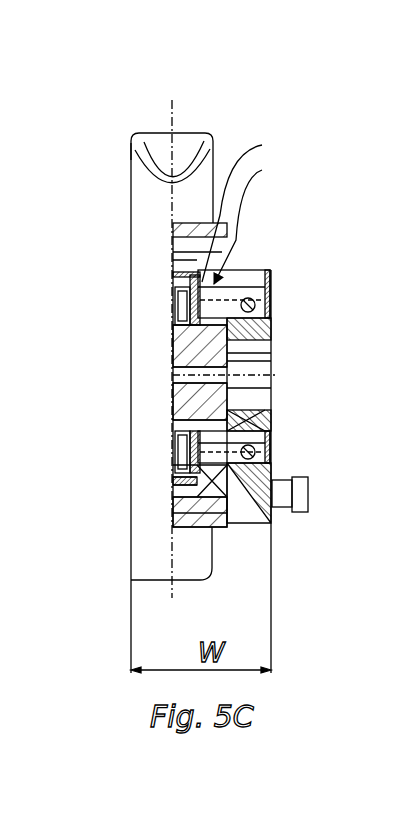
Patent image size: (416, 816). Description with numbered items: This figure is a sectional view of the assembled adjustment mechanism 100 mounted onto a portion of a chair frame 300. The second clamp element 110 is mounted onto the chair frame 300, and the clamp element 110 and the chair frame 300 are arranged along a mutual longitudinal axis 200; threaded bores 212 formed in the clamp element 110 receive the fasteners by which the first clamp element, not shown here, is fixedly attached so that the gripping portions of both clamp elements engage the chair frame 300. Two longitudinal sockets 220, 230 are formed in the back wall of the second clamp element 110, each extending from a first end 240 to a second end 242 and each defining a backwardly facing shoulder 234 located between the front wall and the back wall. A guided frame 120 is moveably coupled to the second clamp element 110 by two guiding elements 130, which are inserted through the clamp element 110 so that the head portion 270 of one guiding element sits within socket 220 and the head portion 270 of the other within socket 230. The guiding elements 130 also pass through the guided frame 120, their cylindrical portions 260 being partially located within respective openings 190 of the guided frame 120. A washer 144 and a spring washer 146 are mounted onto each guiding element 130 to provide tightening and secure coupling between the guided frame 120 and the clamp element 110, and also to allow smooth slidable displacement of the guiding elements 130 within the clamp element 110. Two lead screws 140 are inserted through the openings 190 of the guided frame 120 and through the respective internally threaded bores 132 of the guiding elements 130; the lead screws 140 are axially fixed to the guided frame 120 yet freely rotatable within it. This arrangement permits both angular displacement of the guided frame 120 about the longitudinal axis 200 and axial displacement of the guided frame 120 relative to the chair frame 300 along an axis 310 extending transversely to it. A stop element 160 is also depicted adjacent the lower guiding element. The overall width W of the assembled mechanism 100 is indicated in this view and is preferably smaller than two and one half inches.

The adjustment mechanism 100 is at (189, 209).
The longitudinal axis 200 is at (176, 119).
The chair frame 300 is at (143, 191).
The threaded bores 212 is at (173, 252).
The second end 242 is at (190, 276).
The socket 230 is at (167, 269).
The head portion 270 is at (180, 292).
The first end 240 is at (173, 330).
The socket 220 is at (167, 478).
The spring washer 146 is at (257, 205).
The washer 144 is at (263, 219).
The guiding element 130 is at (238, 284).
The second clamp element 110 is at (230, 276).
The opening 190 is at (270, 272).
The guided frame 120 is at (267, 280).
The cylindrical portion 260 is at (278, 292).
The lead screw 140 is at (272, 310).
The internally threaded bore 132 is at (273, 330).
The axis 310 is at (275, 375).
The stop 160 is at (307, 512).
The backwardly facing shoulder 234 is at (220, 532).